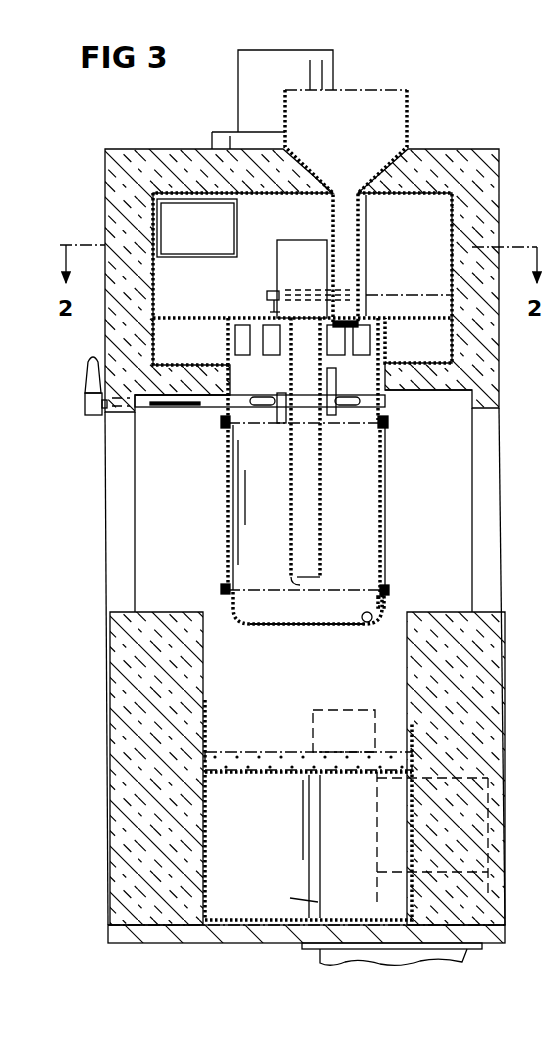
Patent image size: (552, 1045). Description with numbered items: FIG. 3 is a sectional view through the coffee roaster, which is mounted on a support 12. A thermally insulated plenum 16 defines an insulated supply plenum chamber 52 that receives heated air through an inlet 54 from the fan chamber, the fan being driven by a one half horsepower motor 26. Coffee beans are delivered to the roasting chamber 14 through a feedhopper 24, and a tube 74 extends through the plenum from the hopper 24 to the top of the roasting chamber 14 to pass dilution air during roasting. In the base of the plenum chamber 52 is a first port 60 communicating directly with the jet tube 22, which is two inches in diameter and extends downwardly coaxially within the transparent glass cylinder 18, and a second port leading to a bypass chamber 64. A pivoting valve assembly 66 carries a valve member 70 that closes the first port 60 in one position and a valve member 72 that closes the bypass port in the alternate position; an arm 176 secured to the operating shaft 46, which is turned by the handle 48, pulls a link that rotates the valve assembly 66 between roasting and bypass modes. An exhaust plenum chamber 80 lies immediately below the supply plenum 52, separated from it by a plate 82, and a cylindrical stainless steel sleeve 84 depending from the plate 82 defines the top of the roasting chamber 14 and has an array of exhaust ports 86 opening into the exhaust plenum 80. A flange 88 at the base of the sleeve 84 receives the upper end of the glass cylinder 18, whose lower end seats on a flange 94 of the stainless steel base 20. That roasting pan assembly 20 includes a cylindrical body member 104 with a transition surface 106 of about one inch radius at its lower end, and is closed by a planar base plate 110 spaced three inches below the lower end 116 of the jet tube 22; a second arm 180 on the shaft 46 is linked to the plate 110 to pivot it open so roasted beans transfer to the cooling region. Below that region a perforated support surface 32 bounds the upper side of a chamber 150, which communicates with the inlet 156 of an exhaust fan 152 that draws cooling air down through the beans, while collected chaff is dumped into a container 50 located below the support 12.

The support 12 is at (112, 928).
The coffee roasting chamber 14 is at (222, 518).
The thermally insulated plenum 16 is at (130, 149).
The transparent glass cylinder 18 is at (226, 498).
The stainless steel base 20 is at (243, 628).
The jet tube 22 is at (290, 492).
The feedhopper 24 is at (410, 110).
The fan motor 26 is at (237, 86).
The perforated support surface 32 is at (262, 752).
The operating shaft 46 is at (185, 406).
The handle 48 is at (86, 360).
The container 50 is at (470, 952).
The plenum chamber 52 is at (407, 255).
The inlet 54 is at (238, 218).
The first port 60 is at (292, 320).
The bypass chamber 64 is at (420, 302).
The valve assembly 66 is at (273, 282).
The valve member 70 is at (302, 248).
The valve member 72 is at (266, 296).
The tube 74 is at (366, 258).
The exhaust plenum chamber 80 is at (191, 341).
The plate 82 is at (172, 318).
The cylindrical stainless steel sleeve 84 is at (388, 392).
The exhaust ports 86 is at (268, 346).
The flange 88 is at (388, 424).
The flange 94 is at (388, 588).
The cylindrical body member 104 is at (384, 608).
The transition surface 106 is at (368, 624).
The planar base plate 110 is at (330, 627).
The lower end 116 is at (292, 580).
The chamber 150 is at (308, 810).
The exhaust fan 152 is at (300, 899).
The inlet 156 is at (308, 820).
The arm 176 is at (280, 424).
The second arm 180 is at (333, 392).